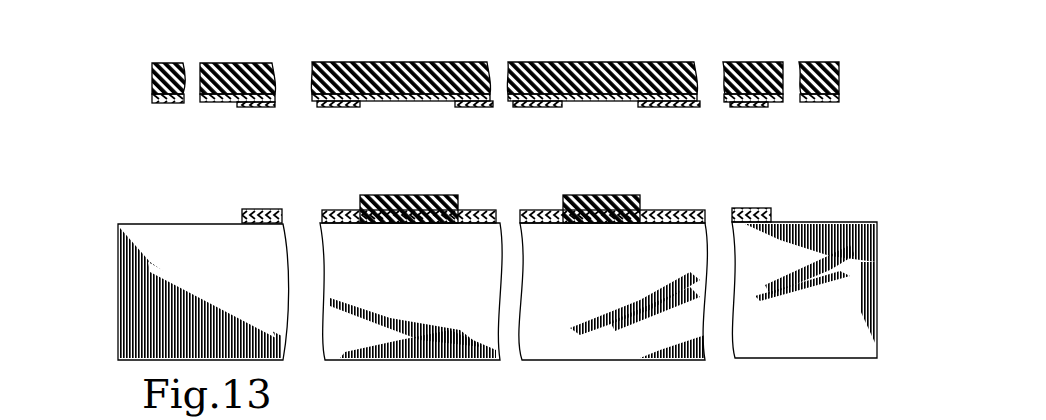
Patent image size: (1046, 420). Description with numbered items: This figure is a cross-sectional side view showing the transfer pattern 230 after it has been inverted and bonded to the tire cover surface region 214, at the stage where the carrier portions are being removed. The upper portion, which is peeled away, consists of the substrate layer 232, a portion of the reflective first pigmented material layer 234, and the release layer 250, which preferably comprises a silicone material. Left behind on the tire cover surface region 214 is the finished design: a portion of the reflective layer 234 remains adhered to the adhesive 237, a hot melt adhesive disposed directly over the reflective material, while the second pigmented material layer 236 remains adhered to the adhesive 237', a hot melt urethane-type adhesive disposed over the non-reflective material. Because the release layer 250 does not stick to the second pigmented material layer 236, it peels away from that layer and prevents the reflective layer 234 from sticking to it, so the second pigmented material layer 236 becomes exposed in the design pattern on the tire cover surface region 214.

The tire cover surface region 214 is at (788, 343).
The transfer pattern 230 is at (848, 73).
The substrate layer 232 is at (150, 71).
The reflective first pigmented material layer 234 is at (150, 104).
The second pigmented material layer 236 is at (240, 208).
The adhesive 237 is at (497, 243).
The adhesive 237' is at (448, 250).
The release layer 250 is at (446, 108).